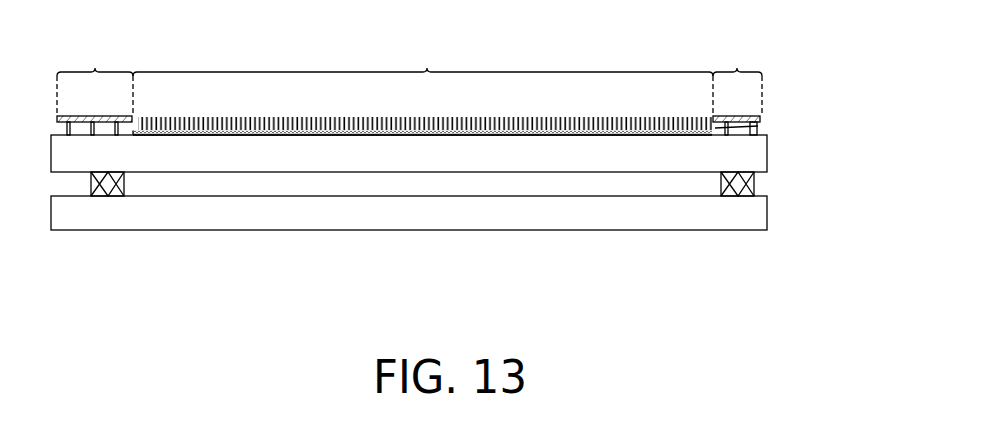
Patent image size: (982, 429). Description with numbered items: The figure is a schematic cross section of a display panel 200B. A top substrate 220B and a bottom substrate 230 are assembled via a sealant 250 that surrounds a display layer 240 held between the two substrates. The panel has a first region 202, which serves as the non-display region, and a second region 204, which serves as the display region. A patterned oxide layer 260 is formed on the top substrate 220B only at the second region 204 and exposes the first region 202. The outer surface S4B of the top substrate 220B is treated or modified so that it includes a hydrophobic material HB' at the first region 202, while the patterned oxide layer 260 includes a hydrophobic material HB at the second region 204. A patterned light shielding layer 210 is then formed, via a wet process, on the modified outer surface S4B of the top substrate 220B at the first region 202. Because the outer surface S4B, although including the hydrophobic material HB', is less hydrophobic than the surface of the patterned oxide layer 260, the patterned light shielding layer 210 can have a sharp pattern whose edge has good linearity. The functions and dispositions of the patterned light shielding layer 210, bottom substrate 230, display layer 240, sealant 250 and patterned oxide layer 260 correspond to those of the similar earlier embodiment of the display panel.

The first region 202 is at (409, 77).
The second region 204 is at (423, 58).
The patterned light shielding layer 210 is at (762, 117).
The patterned oxide layer 260 is at (758, 126).
The hydrophobic material HB' is at (451, 126).
The hydrophobic material HB is at (422, 112).
The top substrate 220B is at (758, 153).
The sealant 250 is at (757, 183).
The bottom substrate 230 is at (758, 215).
The display layer 240 is at (680, 190).
The outer surface S4B is at (592, 137).
The display panel 200B is at (848, 303).